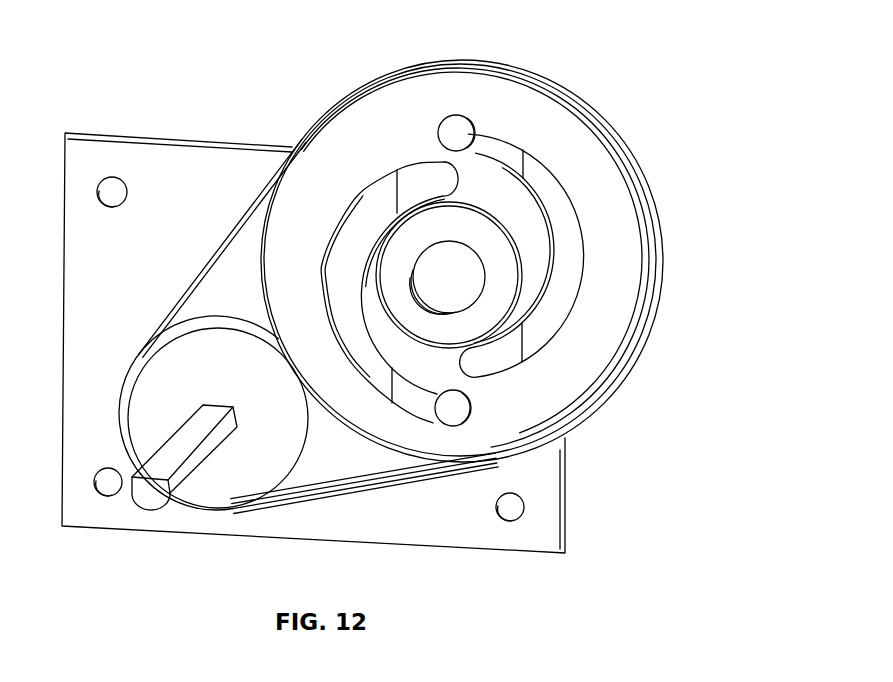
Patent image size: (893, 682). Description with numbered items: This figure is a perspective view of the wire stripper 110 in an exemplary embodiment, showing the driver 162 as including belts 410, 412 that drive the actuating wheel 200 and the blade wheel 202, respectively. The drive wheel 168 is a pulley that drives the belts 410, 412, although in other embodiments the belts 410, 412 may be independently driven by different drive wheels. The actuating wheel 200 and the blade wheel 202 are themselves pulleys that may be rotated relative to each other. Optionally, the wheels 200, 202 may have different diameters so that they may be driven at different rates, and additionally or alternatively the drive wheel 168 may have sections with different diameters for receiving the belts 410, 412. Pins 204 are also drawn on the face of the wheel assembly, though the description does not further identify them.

The wire stripper 110 is at (258, 75).
The driver 162 is at (220, 490).
The drive wheel 168 is at (245, 482).
The actuating wheel 200 is at (587, 373).
The blade wheel 202 is at (567, 270).
The stop pin 204 is at (507, 140).
The belt 410 is at (613, 152).
The belt 412 is at (587, 113).